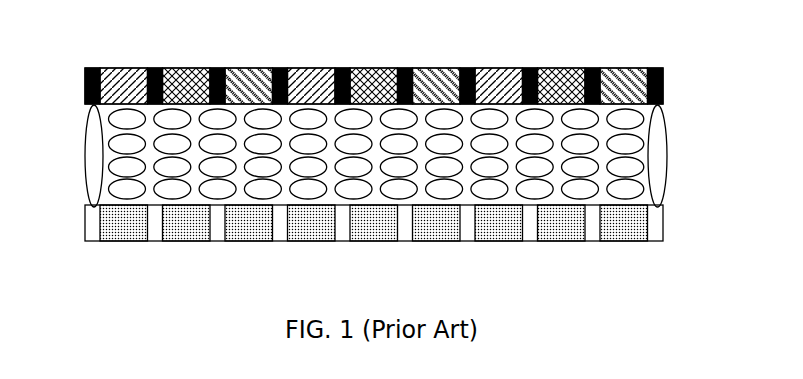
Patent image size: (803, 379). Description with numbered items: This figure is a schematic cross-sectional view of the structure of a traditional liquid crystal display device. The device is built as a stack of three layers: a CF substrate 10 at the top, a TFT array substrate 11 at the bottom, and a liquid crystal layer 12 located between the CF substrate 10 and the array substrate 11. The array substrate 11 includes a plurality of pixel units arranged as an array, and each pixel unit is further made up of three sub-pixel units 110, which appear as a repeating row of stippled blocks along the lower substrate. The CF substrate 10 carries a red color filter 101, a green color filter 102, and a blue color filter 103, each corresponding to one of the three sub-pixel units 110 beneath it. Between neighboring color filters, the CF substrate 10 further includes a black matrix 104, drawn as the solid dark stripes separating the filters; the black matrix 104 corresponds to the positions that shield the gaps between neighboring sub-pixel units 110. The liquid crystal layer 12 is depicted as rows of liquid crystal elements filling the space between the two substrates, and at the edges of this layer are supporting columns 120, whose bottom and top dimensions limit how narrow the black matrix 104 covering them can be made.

The CF substrate 10 is at (398, 66).
The red color filter 101 is at (123, 68).
The green color filter 102 is at (187, 68).
The blue color filter 103 is at (243, 68).
The black matrix 104 is at (341, 68).
The liquid crystal layer 12 is at (673, 157).
The supporting columns 120 is at (92, 157).
The TFT array substrate 11 is at (398, 243).
The sub-pixel units 110 is at (180, 242).